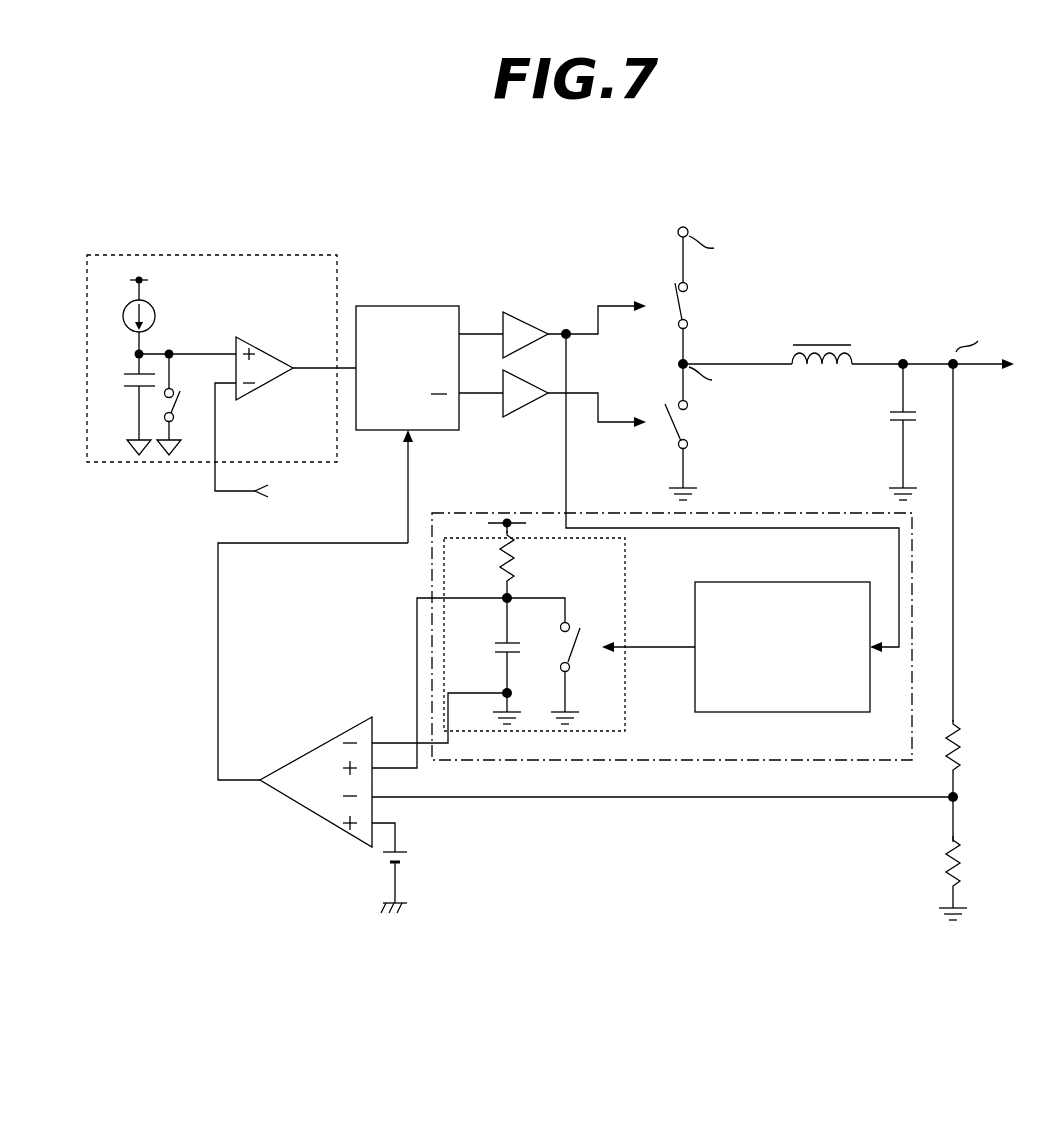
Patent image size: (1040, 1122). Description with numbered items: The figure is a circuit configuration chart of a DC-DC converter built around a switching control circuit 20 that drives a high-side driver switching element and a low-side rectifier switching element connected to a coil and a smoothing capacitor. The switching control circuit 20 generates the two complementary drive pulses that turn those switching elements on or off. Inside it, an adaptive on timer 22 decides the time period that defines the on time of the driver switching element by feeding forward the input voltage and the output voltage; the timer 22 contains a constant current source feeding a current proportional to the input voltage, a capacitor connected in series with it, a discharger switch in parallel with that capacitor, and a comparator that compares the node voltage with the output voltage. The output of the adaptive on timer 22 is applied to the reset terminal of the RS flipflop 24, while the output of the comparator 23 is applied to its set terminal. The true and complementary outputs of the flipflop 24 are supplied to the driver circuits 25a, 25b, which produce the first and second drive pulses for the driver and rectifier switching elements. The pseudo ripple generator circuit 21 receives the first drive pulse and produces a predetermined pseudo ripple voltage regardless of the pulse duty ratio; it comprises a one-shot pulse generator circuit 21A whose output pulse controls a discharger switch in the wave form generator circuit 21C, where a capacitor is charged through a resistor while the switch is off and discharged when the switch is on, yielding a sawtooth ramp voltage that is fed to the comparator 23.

The switching control circuit 20 is at (480, 203).
The pseudo ripple generator circuit 21 is at (431, 567).
The one-shot pulse generator circuit 21A is at (777, 714).
The wave form generator circuit 21C is at (628, 553).
The adaptive on timer 22 is at (148, 465).
The comparator 23 is at (313, 818).
The RS flipflop 24 is at (400, 305).
The driver circuit 25a is at (526, 313).
The driver circuit 25b is at (521, 419).